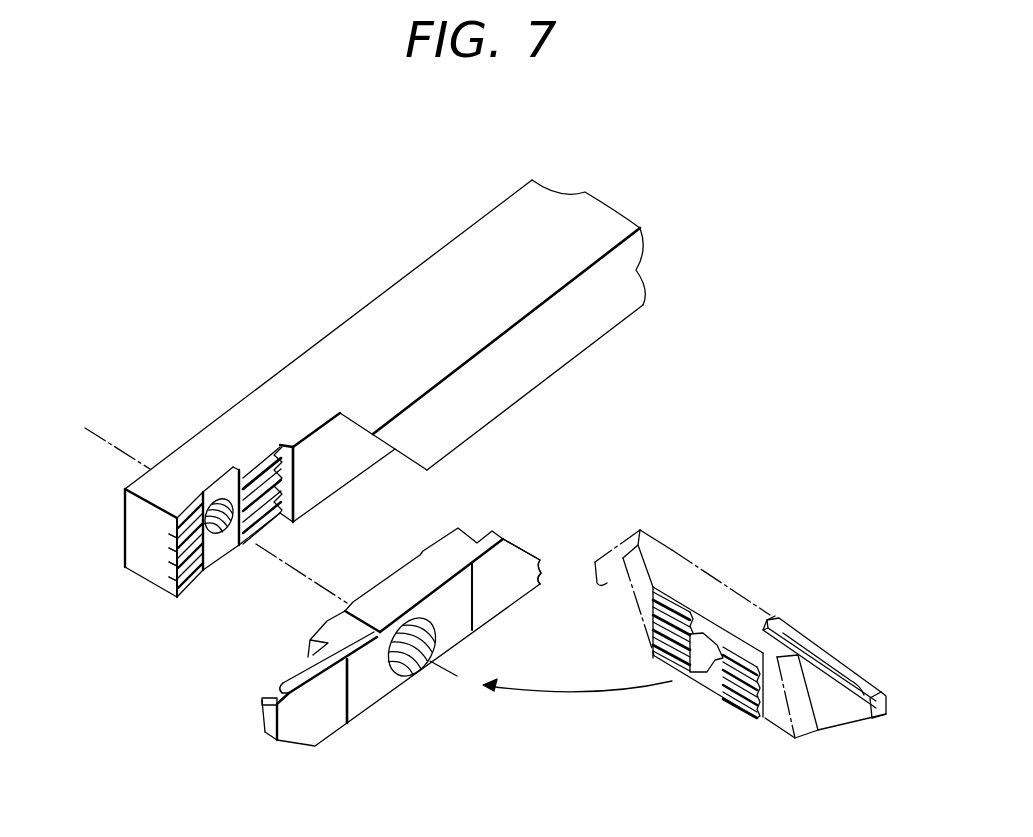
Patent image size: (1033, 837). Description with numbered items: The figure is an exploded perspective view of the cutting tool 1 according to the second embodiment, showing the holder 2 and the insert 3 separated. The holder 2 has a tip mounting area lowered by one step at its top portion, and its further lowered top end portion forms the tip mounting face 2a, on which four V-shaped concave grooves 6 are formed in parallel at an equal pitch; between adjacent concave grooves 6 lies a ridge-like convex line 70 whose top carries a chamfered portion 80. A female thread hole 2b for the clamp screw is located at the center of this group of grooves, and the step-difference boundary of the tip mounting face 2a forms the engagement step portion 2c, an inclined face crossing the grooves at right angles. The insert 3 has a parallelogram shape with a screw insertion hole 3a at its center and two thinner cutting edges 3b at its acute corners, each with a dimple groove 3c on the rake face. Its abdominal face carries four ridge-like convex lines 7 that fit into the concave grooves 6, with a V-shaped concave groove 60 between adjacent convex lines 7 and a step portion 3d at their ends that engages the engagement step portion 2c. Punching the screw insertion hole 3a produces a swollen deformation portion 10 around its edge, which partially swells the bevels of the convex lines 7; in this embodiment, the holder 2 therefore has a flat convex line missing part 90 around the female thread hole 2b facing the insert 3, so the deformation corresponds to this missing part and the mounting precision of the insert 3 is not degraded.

The cutting tool 1 is at (356, 226).
The holder 2 is at (523, 369).
The tip mounting face 2a is at (192, 577).
The female thread hole 2b is at (227, 533).
The engagement step portion 2c is at (285, 445).
The insert 3 is at (383, 712).
The screw insertion hole 3a is at (413, 678).
The cutting edge 3b is at (510, 560).
The dimple groove 3c is at (260, 703).
The step portion 3d is at (422, 553).
The concave grooves 6 is at (270, 492).
The convex lines 7 is at (657, 653).
The swollen deformation portion 10 is at (690, 627).
The concave groove 60 is at (773, 667).
The convex line 70 is at (250, 478).
The chamfered portion 80 is at (284, 473).
The convex line missing part 90 is at (193, 490).